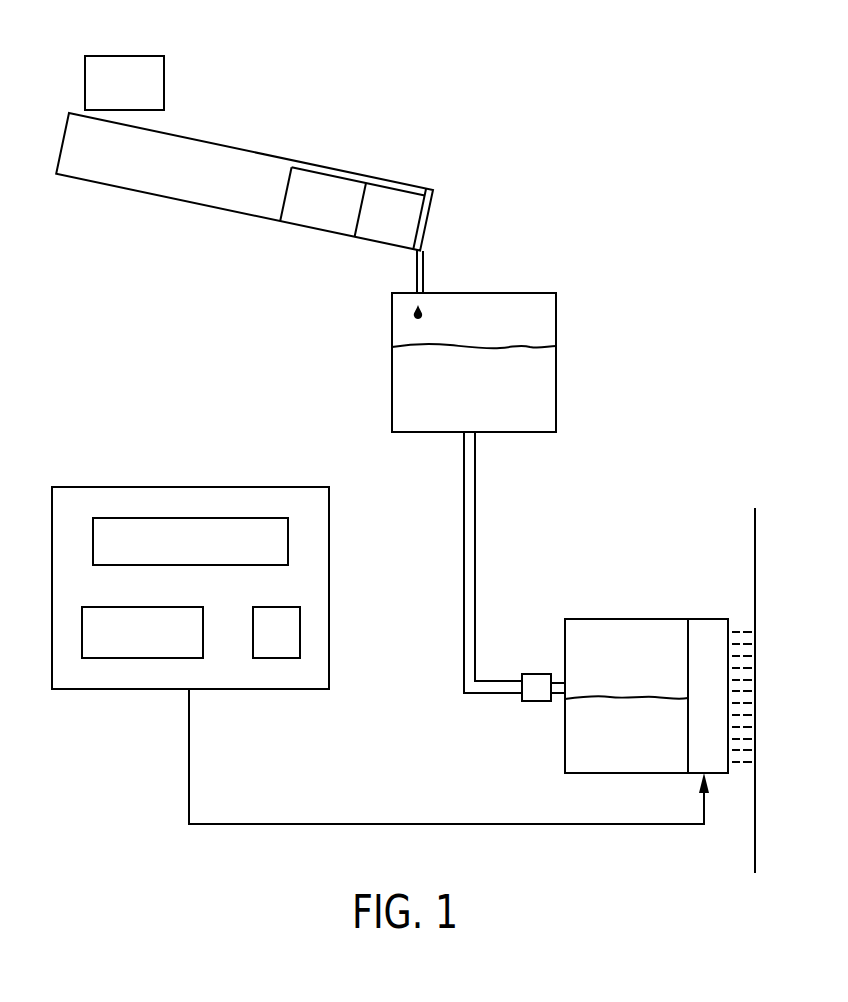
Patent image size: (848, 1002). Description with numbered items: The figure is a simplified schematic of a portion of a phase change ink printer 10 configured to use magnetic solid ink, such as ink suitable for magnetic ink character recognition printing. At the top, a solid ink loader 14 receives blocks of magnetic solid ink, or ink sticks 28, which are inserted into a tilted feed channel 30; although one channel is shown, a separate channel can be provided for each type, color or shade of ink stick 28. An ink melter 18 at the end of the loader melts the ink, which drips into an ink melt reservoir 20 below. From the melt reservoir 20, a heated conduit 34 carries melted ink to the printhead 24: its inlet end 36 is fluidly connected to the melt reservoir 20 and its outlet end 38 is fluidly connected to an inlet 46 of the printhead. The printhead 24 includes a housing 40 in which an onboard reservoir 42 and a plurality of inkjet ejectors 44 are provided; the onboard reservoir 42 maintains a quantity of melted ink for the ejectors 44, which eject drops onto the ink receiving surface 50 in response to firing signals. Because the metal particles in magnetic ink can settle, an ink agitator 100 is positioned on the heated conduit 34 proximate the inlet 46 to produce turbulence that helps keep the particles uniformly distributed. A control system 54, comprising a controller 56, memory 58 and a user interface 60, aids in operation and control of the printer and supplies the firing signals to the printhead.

The phase change ink printer 10 is at (592, 176).
The solid ink loader 14 is at (355, 141).
The ink melter 18 is at (430, 221).
The ink melt reservoir 20 is at (558, 324).
The printhead 24 is at (642, 578).
The ink stick 28 is at (125, 72).
The feed channel 30 is at (208, 140).
The heated conduit 34 is at (463, 595).
The inlet end 36 is at (475, 448).
The outlet end 38 is at (557, 699).
The housing 40 is at (610, 619).
The onboard reservoir 42 is at (605, 757).
The inkjet ejectors 44 is at (700, 619).
The inlet 46 is at (567, 688).
The ink receiving surface 50 is at (753, 834).
The control system 54 is at (125, 487).
The controller 56 is at (238, 518).
The memory 58 is at (138, 658).
The user interface 60 is at (270, 658).
The ink agitator 100 is at (535, 673).